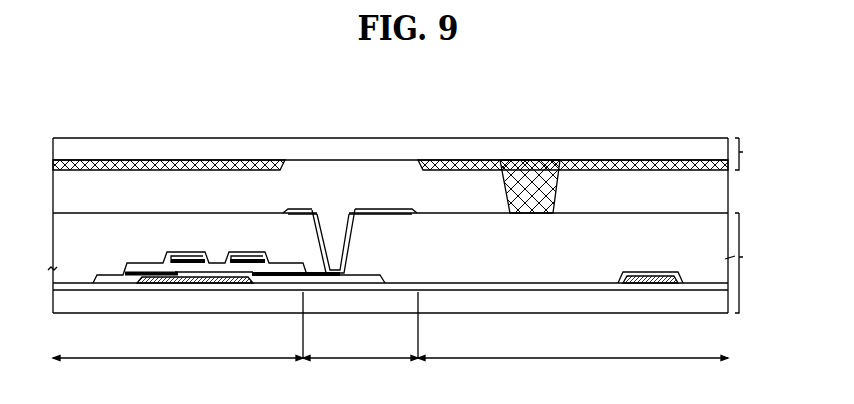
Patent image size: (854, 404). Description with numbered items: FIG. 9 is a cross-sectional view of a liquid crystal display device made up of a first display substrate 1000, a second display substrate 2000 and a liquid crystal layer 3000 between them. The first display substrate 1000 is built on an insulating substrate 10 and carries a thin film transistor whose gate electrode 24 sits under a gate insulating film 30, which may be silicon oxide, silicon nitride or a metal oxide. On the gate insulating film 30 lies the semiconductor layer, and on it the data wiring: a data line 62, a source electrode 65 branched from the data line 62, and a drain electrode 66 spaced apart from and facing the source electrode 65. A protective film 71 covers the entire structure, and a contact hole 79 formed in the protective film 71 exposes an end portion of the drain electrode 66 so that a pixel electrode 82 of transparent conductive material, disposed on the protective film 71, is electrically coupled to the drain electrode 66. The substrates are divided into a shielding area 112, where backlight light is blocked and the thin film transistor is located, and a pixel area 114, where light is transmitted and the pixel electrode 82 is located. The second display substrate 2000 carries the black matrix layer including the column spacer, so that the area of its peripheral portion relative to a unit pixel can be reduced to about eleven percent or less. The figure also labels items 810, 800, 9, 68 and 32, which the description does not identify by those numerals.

The liquid crystal layer 3000 is at (404, 168).
The second display substrate 2000 is at (411, 154).
The first display substrate 1000 is at (747, 263).
The black matrix / adhesive layer 810 is at (114, 172).
The spacer 800 is at (502, 189).
The protective film 71 is at (72, 229).
The insulating substrate 10 is at (385, 313).
The gate insulating film 30 is at (452, 290).
The thin film transistor 9 is at (262, 228).
The gate electrode 24 is at (208, 283).
The data line 62 is at (161, 283).
The drain electrode 66 is at (256, 283).
The source electrode 65 is at (181, 252).
The gate electrode 68 is at (235, 252).
The contact hole 79 is at (330, 230).
The pixel electrode 82 is at (364, 205).
The capacitor electrode 32 is at (645, 283).
The shielding area 112 is at (390, 335).
The pixel area 114 is at (360, 367).